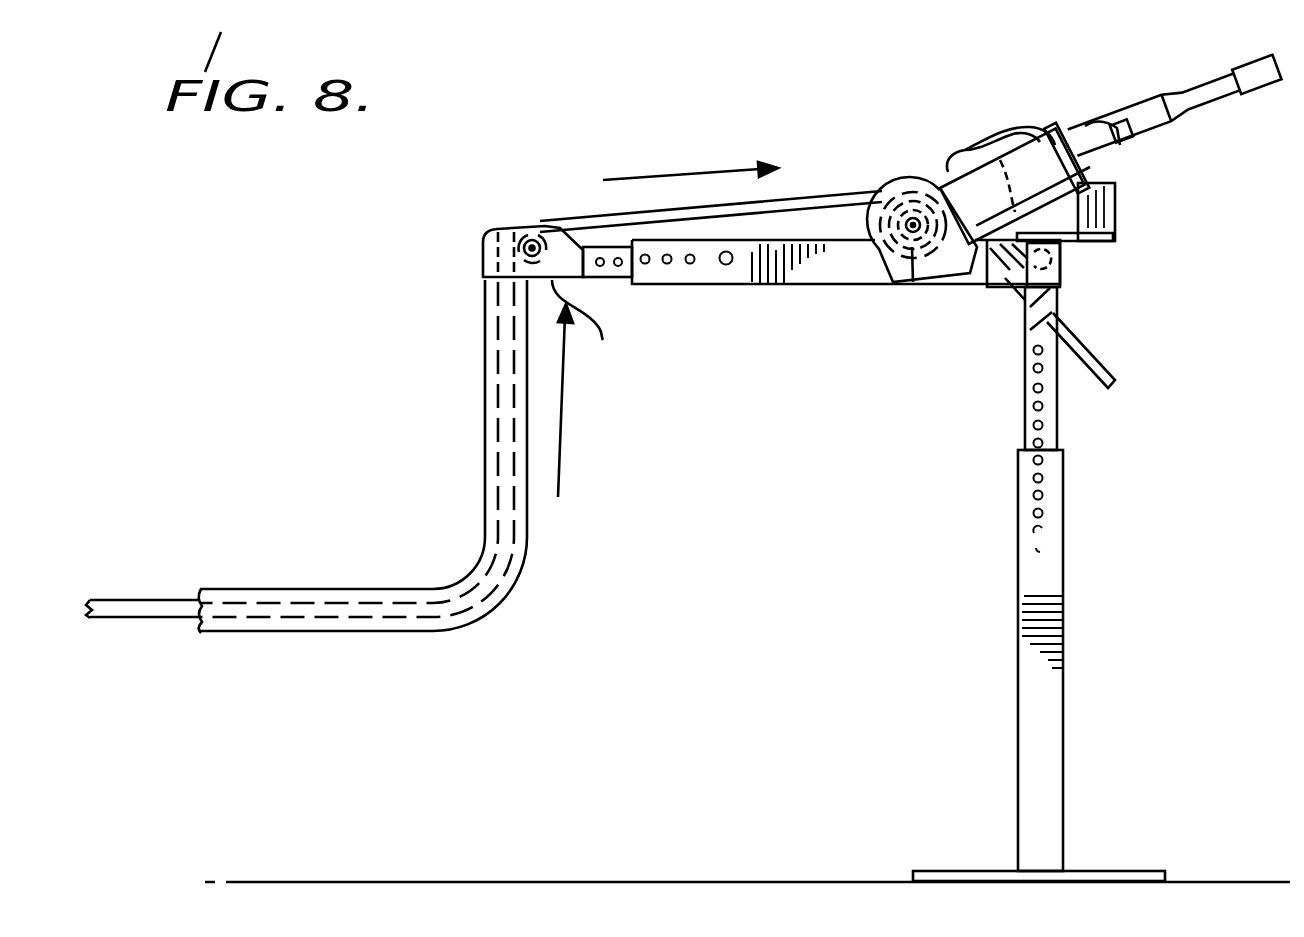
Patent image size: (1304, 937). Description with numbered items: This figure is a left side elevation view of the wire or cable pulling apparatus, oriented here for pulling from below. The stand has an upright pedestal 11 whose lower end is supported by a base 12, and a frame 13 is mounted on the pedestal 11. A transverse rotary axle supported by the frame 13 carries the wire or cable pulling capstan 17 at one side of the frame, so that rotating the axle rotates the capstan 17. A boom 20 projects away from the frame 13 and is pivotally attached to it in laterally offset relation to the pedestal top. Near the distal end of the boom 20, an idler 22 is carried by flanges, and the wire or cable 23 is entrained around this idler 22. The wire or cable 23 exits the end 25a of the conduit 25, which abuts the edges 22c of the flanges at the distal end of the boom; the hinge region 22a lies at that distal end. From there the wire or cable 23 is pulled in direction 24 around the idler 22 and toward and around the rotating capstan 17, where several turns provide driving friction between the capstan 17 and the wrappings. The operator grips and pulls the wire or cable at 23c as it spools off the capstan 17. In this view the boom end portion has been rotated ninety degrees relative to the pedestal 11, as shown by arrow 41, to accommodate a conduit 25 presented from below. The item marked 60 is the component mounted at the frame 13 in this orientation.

The upright pedestal 11 is at (1075, 606).
The base 12 is at (1138, 871).
The frame 13 is at (1115, 188).
The wire or cable pulling capstan 17 is at (905, 295).
The boom 20 is at (795, 292).
The idler 22 is at (548, 240).
The hinge block 22a is at (487, 243).
The edges of the flanges 22c is at (608, 331).
The wire or cable 23 is at (845, 193).
The wire or cable gripping location 23c is at (1118, 353).
The pulling direction 24 is at (657, 172).
The conduit 25 is at (480, 427).
The end of the conduit 25a is at (485, 285).
The arrow 41 is at (560, 467).
The spray gun 60 is at (985, 162).